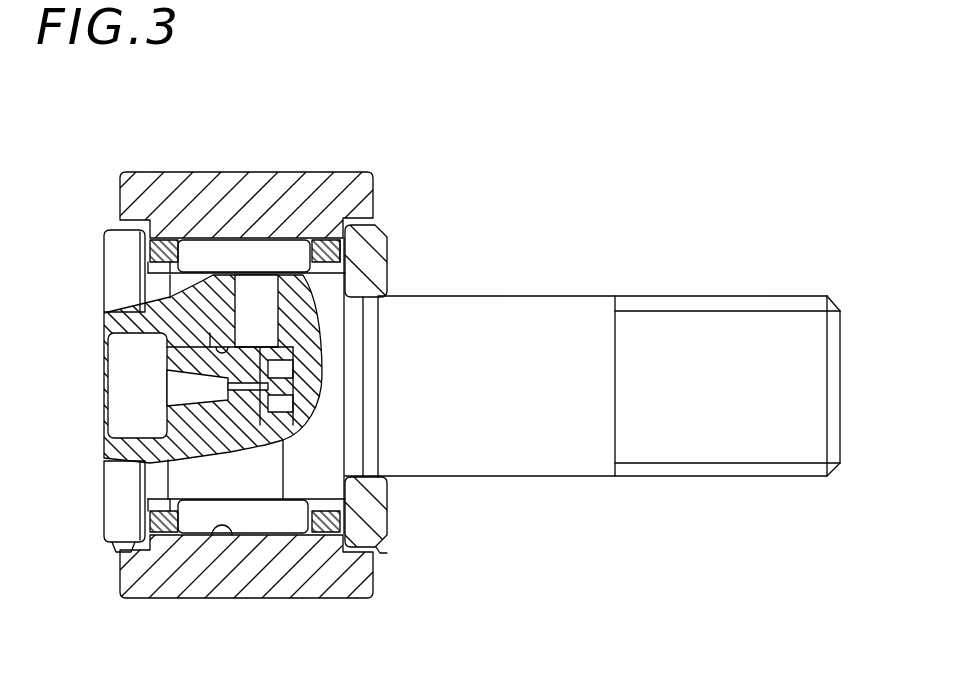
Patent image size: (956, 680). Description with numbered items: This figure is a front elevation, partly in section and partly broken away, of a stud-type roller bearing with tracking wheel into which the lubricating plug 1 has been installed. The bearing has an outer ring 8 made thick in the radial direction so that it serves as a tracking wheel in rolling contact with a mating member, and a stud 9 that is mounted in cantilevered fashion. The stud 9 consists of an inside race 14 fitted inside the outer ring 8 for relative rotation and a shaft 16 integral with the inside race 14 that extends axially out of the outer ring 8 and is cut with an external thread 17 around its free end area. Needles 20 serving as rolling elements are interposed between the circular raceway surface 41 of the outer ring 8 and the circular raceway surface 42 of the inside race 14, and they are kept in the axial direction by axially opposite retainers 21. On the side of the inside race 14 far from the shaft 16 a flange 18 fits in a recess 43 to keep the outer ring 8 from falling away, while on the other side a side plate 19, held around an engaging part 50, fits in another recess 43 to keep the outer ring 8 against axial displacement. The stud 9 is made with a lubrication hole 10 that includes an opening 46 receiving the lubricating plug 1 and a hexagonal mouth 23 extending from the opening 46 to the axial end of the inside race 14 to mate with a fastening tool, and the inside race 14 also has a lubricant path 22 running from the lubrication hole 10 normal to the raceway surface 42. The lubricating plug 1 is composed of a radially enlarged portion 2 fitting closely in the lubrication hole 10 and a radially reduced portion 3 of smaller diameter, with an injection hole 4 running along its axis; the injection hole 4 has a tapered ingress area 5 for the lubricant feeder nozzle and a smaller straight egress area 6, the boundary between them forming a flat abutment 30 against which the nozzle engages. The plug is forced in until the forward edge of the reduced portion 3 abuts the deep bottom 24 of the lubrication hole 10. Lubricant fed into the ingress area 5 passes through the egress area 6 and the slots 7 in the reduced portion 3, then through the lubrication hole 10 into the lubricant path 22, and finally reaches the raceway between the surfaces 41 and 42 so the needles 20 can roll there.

The lubricating plug 1 is at (150, 315).
The radially enlarged portion 2 is at (232, 405).
The radially reduced portion 3 is at (322, 258).
The injection hole 4 is at (186, 389).
The ingress area 5 is at (192, 362).
The egress area 6 is at (290, 406).
The slot 7 is at (288, 411).
The outer ring 8 is at (290, 195).
The stud 9 is at (524, 293).
The lubrication hole 10 is at (170, 420).
The inside race 14 is at (310, 472).
The shaft 16 is at (468, 438).
The external thread 17 is at (722, 470).
The flange 18 is at (122, 248).
The side plate 19 is at (372, 258).
The needle 20 is at (292, 250).
The retainer 21 is at (158, 262).
The lubricant path 22 is at (258, 290).
The mouth 23 is at (137, 392).
The deep bottom 24 is at (300, 378).
The flat abutment 30 is at (225, 376).
The circular raceway surface of the outer ring 41 is at (233, 535).
The circular raceway surface of the inside race 42 is at (210, 340).
The recess 43 is at (123, 552).
The opening 46 is at (222, 352).
The engaging part 50 is at (372, 352).